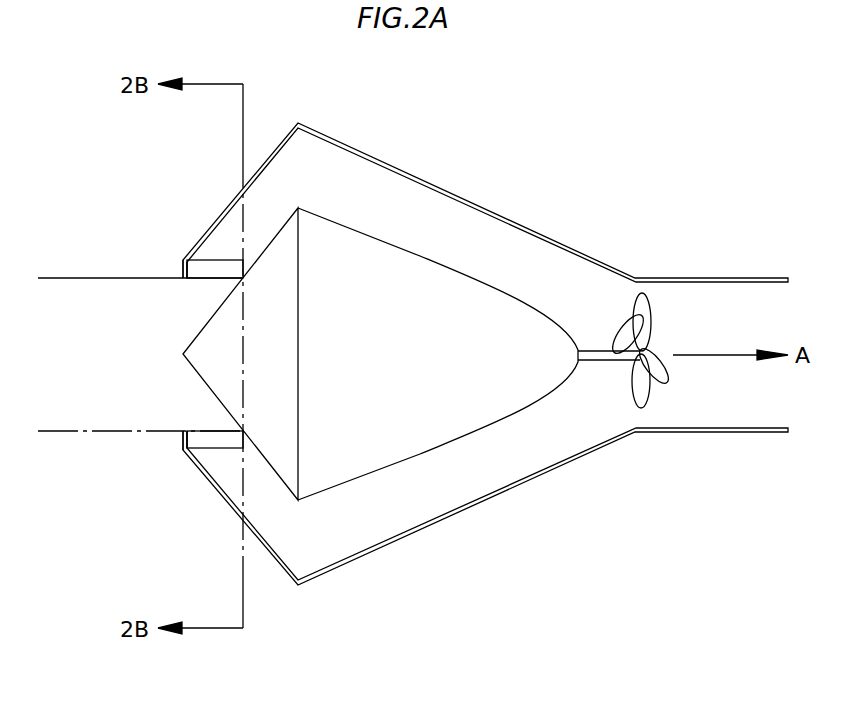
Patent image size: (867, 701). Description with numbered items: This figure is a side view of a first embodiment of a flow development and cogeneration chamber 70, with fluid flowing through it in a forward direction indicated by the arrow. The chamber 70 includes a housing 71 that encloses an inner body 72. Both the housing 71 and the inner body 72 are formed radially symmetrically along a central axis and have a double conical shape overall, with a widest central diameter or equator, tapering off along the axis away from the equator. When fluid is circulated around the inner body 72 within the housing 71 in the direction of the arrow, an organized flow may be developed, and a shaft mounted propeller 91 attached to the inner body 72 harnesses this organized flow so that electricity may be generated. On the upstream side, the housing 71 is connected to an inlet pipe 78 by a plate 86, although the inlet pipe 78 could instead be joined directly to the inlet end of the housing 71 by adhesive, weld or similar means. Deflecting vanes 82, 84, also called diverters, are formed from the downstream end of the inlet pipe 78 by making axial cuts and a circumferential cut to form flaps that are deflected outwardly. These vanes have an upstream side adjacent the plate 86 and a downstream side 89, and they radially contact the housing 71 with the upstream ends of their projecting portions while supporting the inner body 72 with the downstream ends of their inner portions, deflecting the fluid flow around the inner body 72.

The flow development and cogeneration chamber 70 is at (436, 105).
The housing 71 is at (547, 234).
The inner body 72 is at (462, 410).
The inlet pipe 78 is at (100, 278).
The deflecting vane 82 is at (213, 442).
The deflecting vane 84 is at (213, 272).
The plate 86 is at (183, 272).
The downstream side 89 is at (246, 436).
The propeller 91 is at (602, 350).